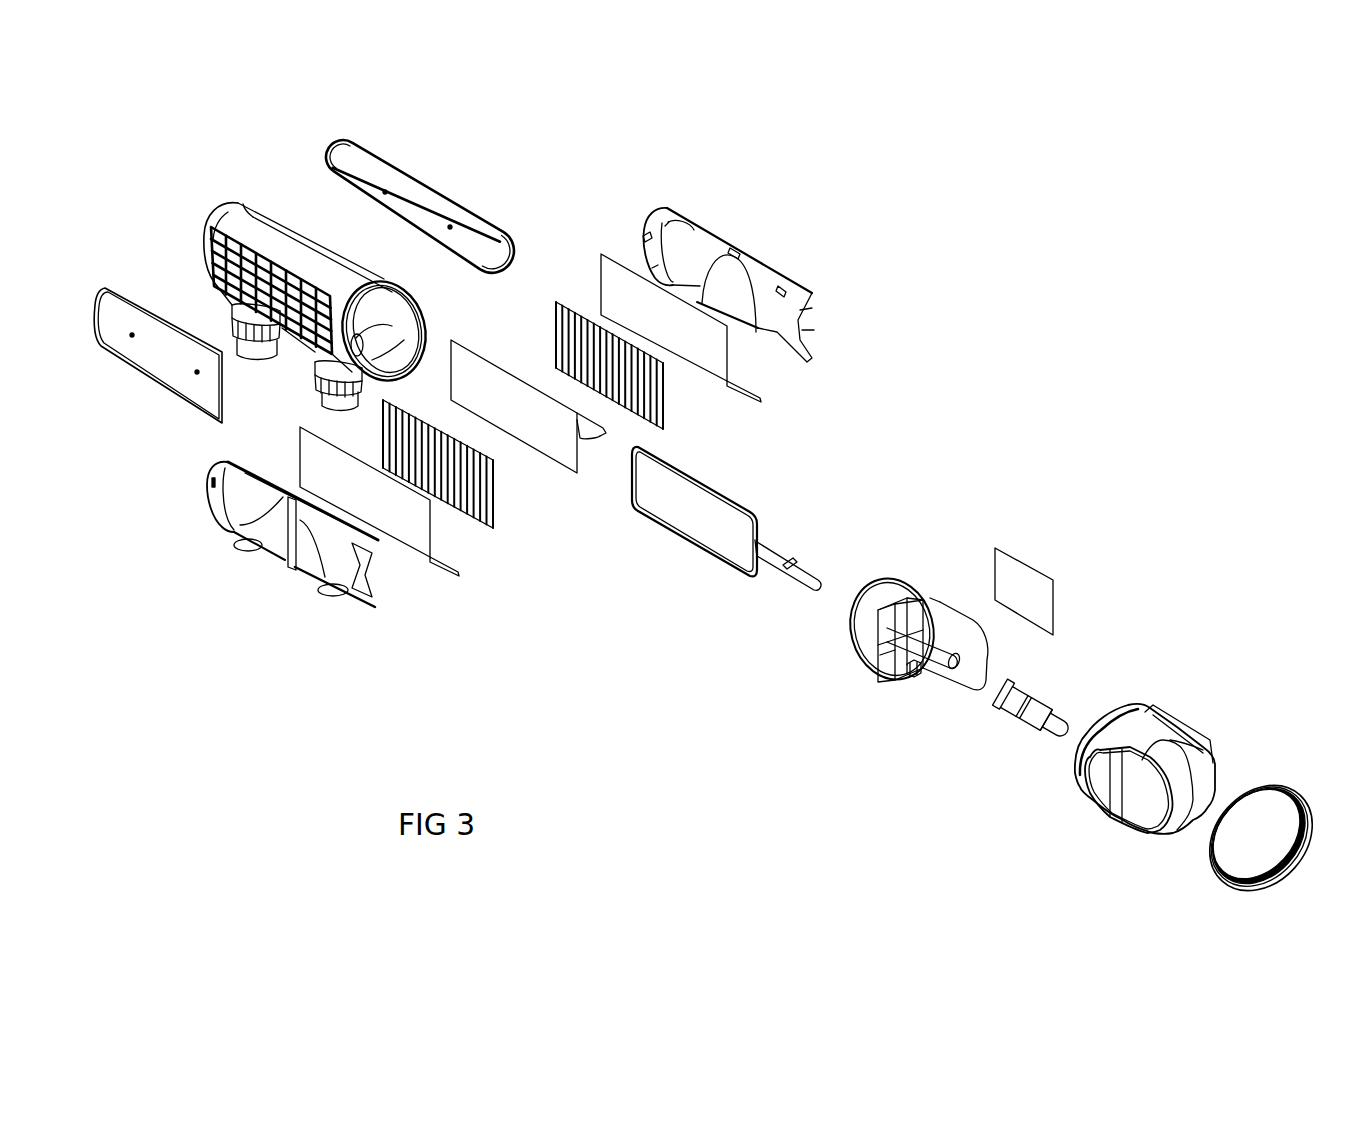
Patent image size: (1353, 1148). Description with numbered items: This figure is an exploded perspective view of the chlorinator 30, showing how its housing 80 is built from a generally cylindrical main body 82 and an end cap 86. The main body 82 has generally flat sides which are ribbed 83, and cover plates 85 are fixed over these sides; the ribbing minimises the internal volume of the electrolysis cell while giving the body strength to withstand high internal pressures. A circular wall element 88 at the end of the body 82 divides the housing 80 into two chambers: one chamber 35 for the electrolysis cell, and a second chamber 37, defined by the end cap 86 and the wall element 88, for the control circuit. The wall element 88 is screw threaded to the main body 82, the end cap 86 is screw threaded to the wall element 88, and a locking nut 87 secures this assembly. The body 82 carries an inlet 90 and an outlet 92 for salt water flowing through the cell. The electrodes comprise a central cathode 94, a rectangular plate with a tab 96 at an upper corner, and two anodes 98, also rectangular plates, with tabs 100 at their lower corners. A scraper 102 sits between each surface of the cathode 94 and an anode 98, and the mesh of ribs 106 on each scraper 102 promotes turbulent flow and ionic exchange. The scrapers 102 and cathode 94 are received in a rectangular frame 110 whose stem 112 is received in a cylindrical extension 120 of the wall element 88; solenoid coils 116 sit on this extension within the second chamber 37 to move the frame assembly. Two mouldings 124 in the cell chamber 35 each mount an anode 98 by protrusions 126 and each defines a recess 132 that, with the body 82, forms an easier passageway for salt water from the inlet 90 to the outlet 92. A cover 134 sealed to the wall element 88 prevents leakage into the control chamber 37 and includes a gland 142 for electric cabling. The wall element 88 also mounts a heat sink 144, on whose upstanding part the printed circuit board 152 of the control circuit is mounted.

The chlorinator 30 is at (557, 190).
The electrolysis cell chamber 35 is at (388, 352).
The control circuit chamber 37 is at (1062, 758).
The housing 80 is at (274, 166).
The main body 82 is at (288, 232).
The ribbed sides 83 is at (204, 243).
The cover plates 85 is at (405, 178).
The end cap 86 is at (1147, 730).
The locking nut 87 is at (1282, 780).
The wall element 88 is at (845, 628).
The inlet 90 is at (255, 353).
The outlet 92 is at (327, 397).
The cathode 94 is at (468, 378).
The cathode tab 96 is at (577, 436).
The anodes 98 is at (612, 292).
The anode tabs 100 is at (747, 398).
The scraper 102 is at (683, 412).
The ribs 106 is at (568, 337).
The frame 110 is at (698, 553).
The stem 112 is at (778, 558).
The solenoid coils 116 is at (1032, 692).
The cylindrical extension 120 is at (930, 650).
The moulding 124 is at (782, 262).
The protrusions 126 is at (660, 220).
The recess 132 is at (703, 250).
The cover 134 is at (887, 668).
The gland 142 is at (917, 675).
The heat sink 144 is at (952, 610).
The printed circuit board 152 is at (1030, 580).